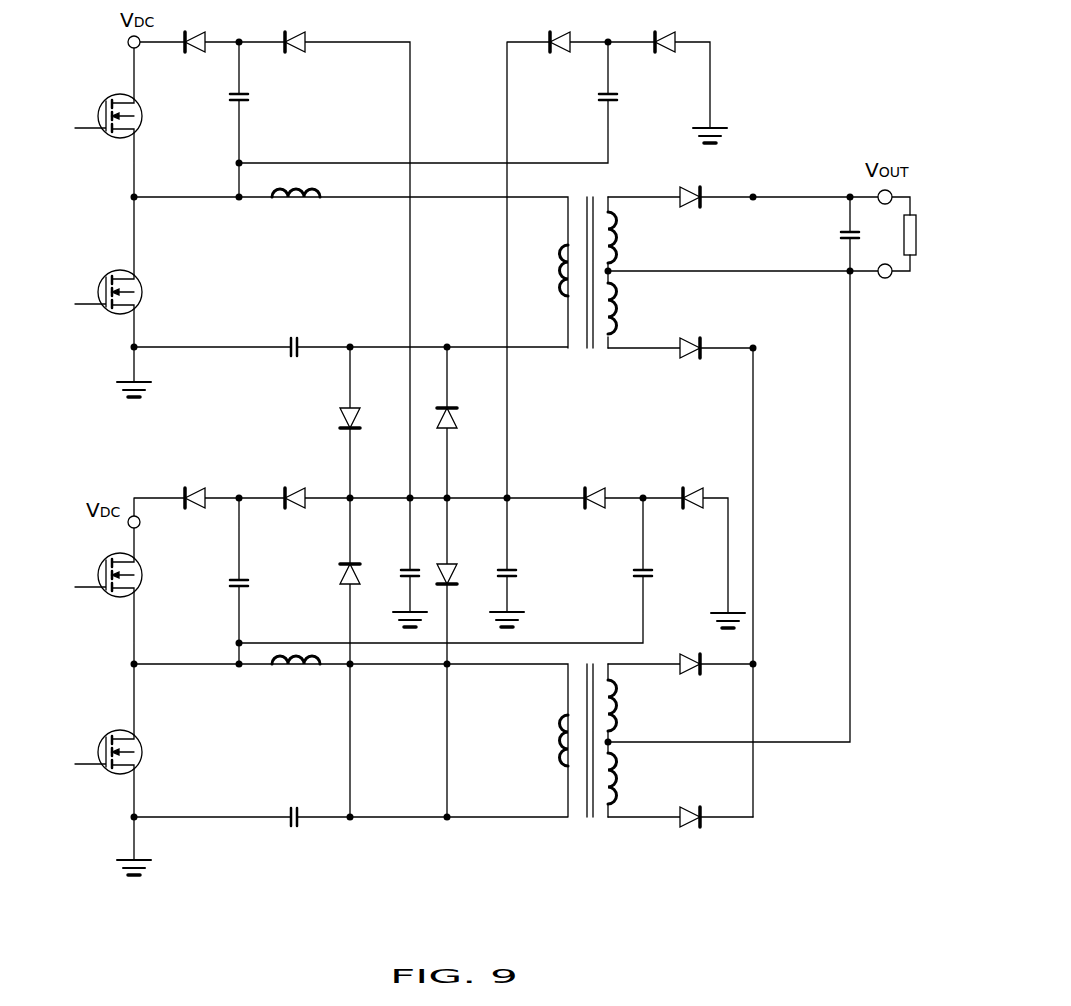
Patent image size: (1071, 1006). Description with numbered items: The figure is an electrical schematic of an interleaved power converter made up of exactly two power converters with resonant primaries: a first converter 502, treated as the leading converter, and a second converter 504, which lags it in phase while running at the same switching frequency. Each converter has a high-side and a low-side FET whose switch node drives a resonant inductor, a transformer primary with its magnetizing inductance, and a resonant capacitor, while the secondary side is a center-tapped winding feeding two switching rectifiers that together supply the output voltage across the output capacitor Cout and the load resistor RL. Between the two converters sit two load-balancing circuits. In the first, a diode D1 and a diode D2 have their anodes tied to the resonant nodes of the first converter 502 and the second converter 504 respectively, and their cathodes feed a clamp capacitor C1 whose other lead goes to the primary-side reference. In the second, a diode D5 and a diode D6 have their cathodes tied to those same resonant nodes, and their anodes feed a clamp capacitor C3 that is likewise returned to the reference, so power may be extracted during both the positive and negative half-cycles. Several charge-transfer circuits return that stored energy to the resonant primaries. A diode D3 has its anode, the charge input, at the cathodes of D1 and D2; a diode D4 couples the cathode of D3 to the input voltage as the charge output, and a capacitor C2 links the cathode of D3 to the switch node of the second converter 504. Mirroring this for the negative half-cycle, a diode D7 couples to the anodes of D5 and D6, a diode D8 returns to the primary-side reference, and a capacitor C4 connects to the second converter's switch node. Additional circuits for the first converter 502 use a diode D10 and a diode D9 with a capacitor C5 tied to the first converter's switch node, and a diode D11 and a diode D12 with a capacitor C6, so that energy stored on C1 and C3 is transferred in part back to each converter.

The first converter 502 is at (713, 228).
The second converter 504 is at (713, 706).
The output capacitor Cout is at (823, 236).
The load resistor RL is at (925, 235).
The diode D1 is at (367, 420).
The diode D2 is at (333, 576).
The diode D3 is at (291, 513).
The diode D4 is at (195, 513).
The diode D5 is at (464, 420).
The diode D6 is at (464, 576).
The diode D7 is at (599, 513).
The diode D8 is at (694, 513).
The diode D9 is at (195, 57).
The diode D10 is at (297, 57).
The diode D11 is at (567, 57).
The diode D12 is at (670, 57).
The clamp capacitor C1 is at (395, 576).
The capacitor C2 is at (222, 583).
The clamp capacitor C3 is at (524, 576).
The capacitor C4 is at (661, 576).
The capacitor C5 is at (223, 98).
The capacitor C6 is at (591, 98).